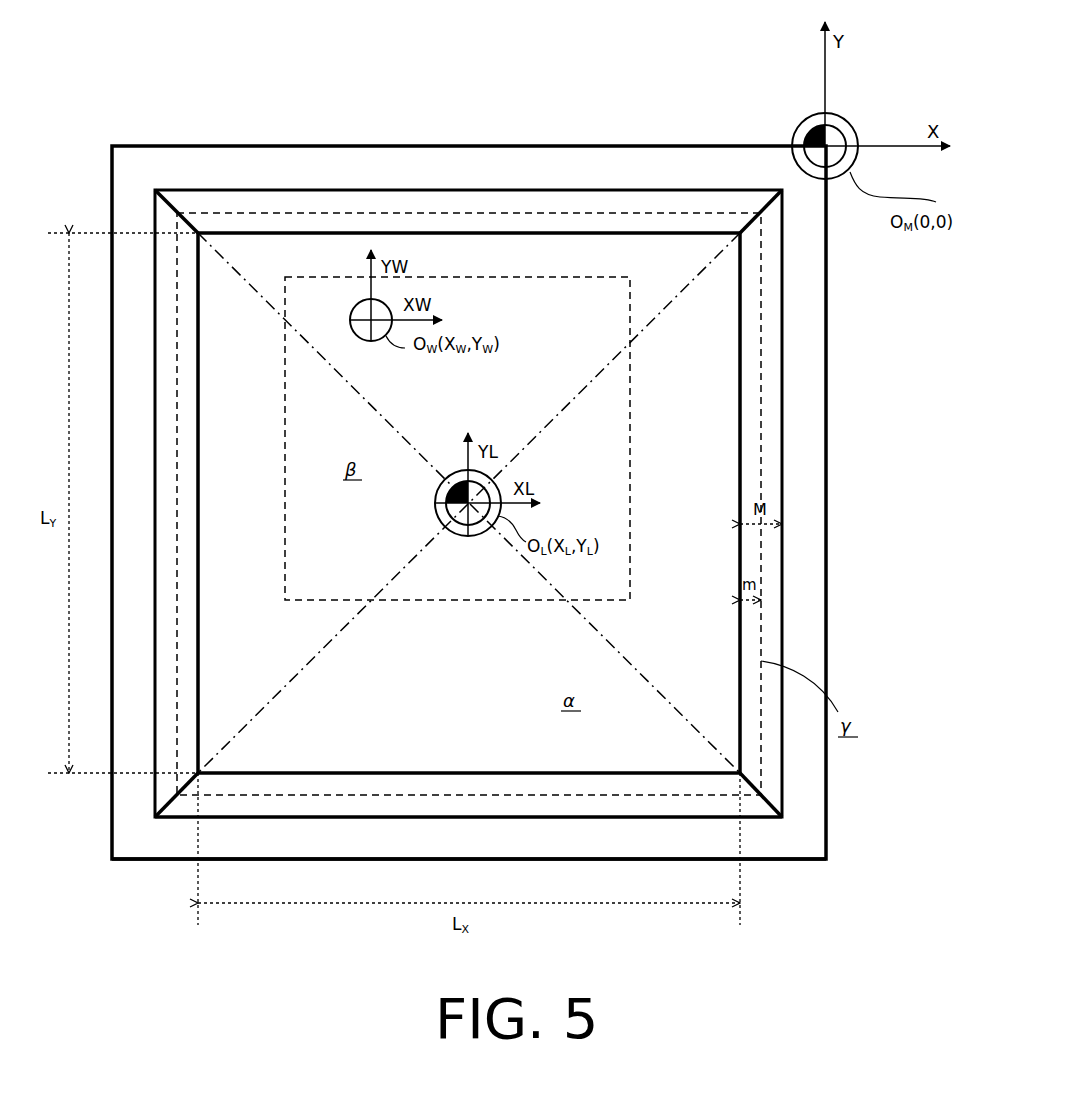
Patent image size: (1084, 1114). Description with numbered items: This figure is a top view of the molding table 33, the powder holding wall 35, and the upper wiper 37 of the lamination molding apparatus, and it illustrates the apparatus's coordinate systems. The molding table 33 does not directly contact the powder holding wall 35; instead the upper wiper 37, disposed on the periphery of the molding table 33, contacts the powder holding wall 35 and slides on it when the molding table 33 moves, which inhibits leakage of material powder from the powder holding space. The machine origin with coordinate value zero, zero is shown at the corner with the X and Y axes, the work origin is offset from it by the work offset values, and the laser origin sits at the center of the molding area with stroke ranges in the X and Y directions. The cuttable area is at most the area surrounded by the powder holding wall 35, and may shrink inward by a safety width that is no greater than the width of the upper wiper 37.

The molding table 33 is at (700, 333).
The powder holding wall 35 is at (778, 838).
The upper wiper 37 is at (185, 803).